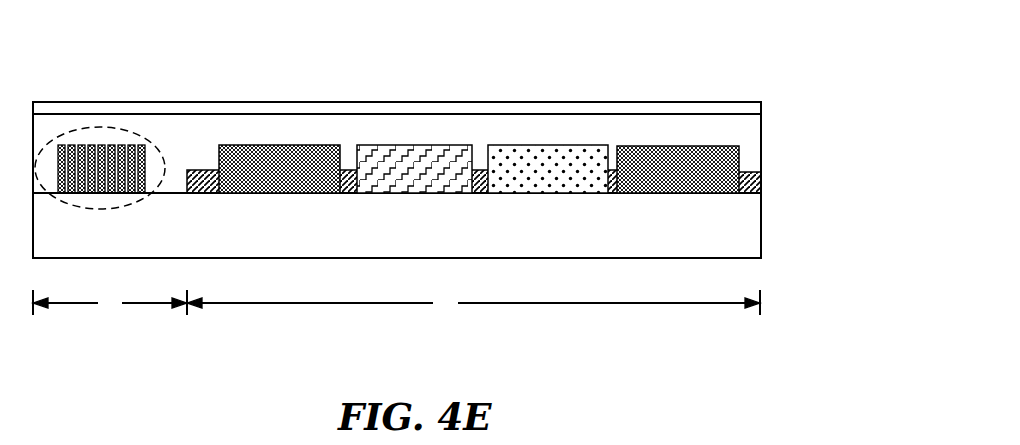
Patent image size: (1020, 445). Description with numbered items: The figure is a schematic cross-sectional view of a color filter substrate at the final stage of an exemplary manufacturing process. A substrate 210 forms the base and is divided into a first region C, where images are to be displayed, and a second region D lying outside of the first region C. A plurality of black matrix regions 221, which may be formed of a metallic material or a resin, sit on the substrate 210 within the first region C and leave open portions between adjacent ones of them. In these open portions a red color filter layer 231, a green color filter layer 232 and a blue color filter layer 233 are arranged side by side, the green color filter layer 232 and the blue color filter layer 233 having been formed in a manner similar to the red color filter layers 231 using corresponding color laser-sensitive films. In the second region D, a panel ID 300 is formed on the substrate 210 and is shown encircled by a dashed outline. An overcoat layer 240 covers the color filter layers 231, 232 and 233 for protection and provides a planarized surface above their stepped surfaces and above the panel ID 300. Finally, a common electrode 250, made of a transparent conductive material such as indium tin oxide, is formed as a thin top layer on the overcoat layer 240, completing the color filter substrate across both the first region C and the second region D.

The substrate 210 is at (735, 230).
The black matrix regions 221 is at (204, 170).
The red color filter layers 231 is at (280, 145).
The green color filter layer 232 is at (410, 145).
The blue color filter layer 233 is at (548, 155).
The overcoat layer 240 is at (752, 142).
The common electrode 250 is at (752, 108).
The panel ID 300 is at (117, 128).
The second region D is at (110, 304).
The first region C is at (473, 303).